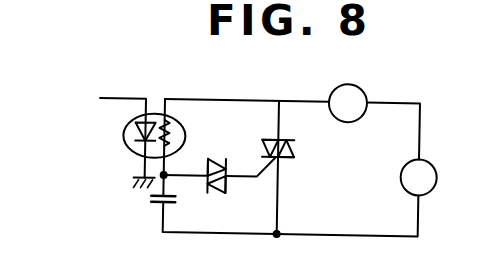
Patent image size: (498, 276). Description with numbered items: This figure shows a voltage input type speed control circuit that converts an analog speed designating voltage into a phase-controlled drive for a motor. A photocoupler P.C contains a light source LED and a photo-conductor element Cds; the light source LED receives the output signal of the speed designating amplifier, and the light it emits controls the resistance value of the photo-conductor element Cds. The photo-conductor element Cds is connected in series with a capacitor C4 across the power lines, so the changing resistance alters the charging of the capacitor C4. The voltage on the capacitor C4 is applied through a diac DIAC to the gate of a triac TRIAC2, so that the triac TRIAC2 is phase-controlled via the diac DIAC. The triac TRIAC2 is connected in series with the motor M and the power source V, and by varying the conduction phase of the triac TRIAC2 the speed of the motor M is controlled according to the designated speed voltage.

The photocoupler P.C is at (153, 116).
The light source LED is at (136, 136).
The photo-conductor element Cds is at (171, 141).
The capacitor C4 is at (150, 211).
The diac DIAC is at (227, 191).
The triac TRIAC2 is at (315, 166).
The motor M is at (348, 103).
The power source V is at (418, 177).